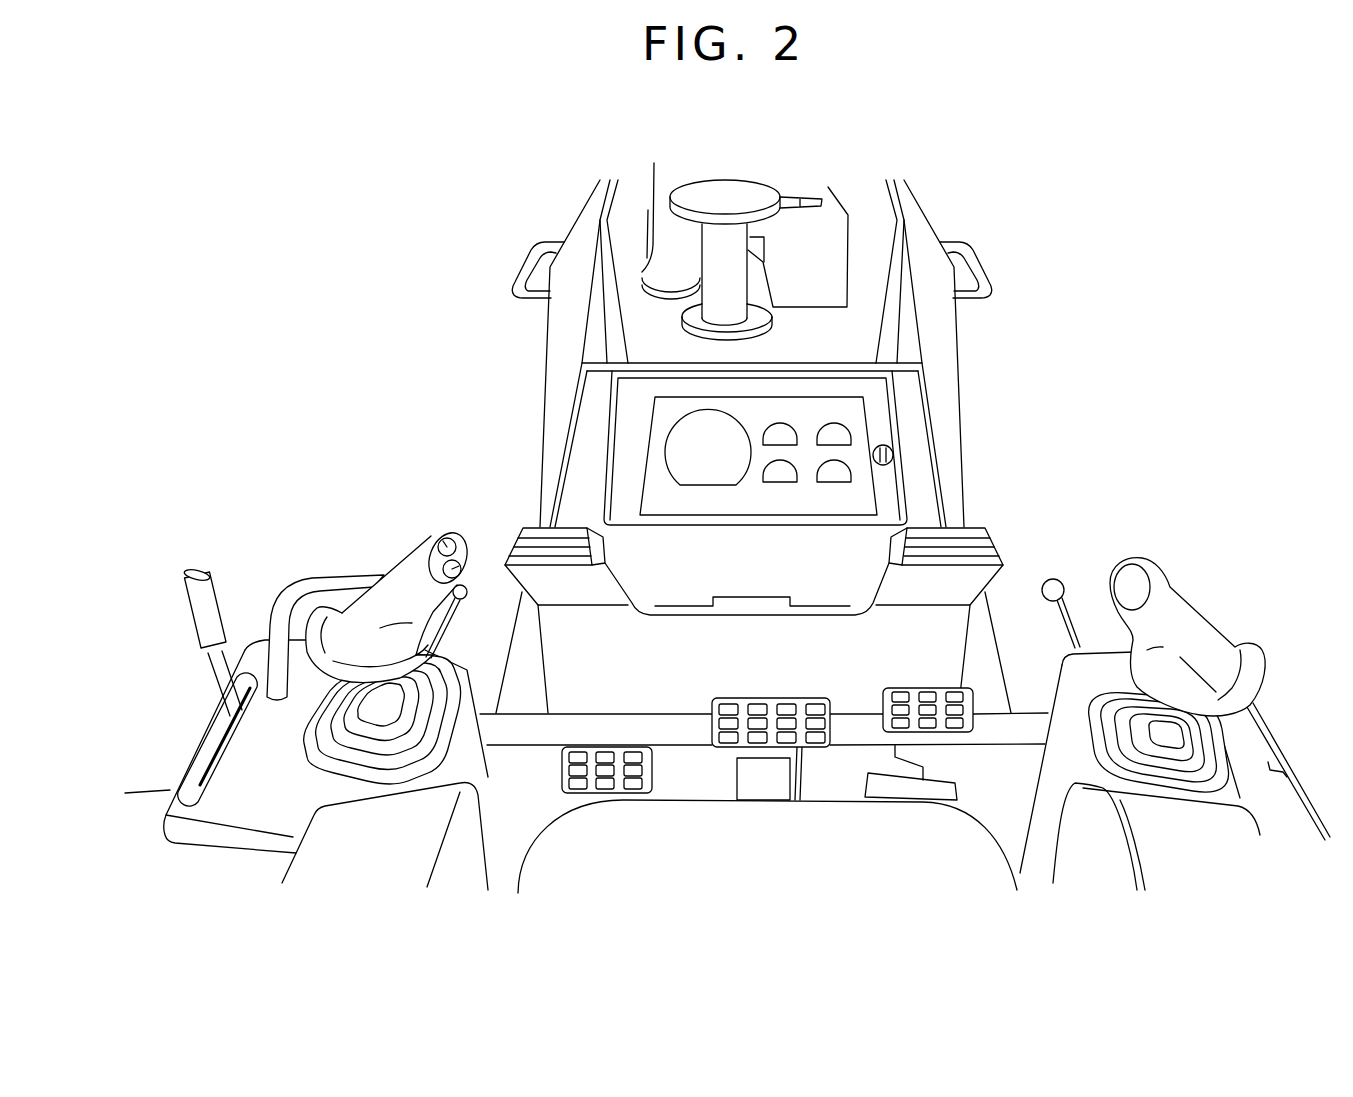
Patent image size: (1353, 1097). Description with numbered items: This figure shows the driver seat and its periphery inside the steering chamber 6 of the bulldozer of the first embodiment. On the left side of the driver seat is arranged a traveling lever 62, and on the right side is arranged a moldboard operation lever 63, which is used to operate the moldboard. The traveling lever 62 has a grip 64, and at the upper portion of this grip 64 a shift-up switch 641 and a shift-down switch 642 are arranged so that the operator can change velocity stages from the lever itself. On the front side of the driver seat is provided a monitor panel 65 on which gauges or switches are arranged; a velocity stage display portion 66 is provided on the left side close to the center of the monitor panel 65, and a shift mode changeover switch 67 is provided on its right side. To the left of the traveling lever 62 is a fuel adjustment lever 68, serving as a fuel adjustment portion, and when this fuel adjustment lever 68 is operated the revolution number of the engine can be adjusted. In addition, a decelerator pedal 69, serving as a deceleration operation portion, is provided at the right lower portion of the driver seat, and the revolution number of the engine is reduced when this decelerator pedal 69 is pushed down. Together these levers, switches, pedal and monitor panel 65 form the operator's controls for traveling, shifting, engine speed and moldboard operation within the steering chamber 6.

The steering chamber 6 is at (341, 277).
The traveling lever 62 is at (313, 583).
The moldboard operation lever 63 is at (1190, 620).
The grip 64 is at (400, 573).
The shift-up switch 641 is at (446, 545).
The shift-down switch 642 is at (453, 568).
The monitor panel 65 is at (627, 450).
The velocity stage display portion 66 is at (683, 447).
The shift mode changeover switch 67 is at (892, 447).
The fuel adjustment lever 68 is at (197, 573).
The decelerator pedal 69 is at (978, 697).